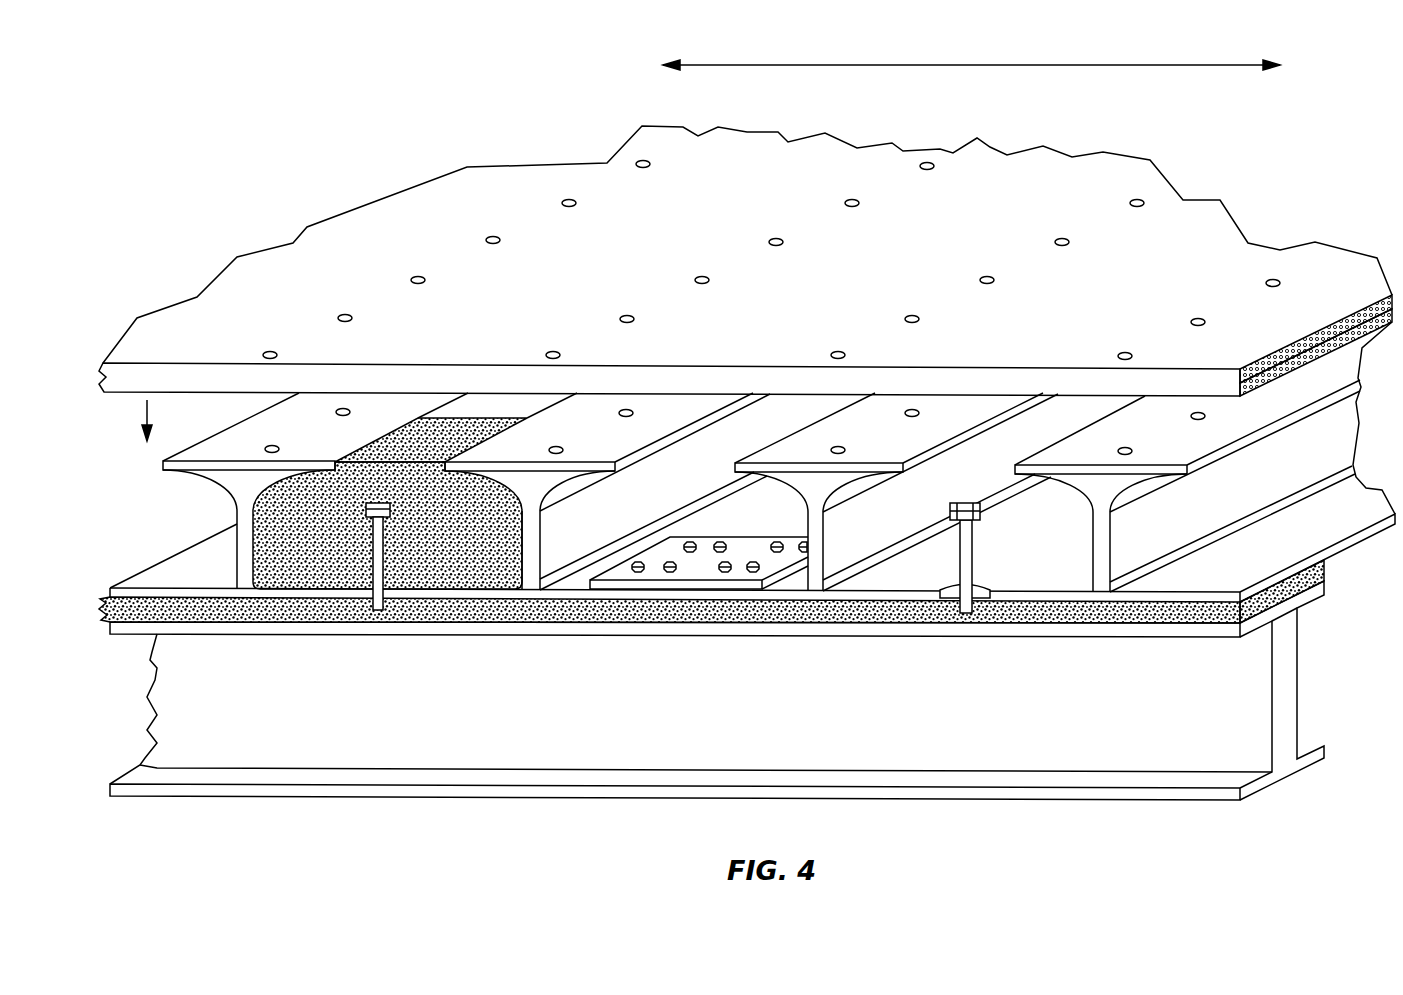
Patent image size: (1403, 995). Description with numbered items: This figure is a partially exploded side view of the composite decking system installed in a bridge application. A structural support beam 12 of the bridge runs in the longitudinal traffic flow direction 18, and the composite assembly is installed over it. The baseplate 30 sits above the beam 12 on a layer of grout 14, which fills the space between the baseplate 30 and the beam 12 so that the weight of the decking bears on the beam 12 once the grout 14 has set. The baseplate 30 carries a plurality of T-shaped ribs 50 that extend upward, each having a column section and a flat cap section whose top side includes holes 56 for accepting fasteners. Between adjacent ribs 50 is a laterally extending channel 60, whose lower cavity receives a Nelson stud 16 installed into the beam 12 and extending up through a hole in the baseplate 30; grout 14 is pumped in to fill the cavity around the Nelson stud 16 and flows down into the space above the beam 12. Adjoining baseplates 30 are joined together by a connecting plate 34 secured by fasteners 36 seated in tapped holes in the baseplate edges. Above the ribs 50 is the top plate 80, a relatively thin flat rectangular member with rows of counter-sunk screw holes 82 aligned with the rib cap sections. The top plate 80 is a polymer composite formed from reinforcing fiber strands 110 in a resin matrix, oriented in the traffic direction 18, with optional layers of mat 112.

The beam 12 is at (1252, 678).
The grout 14 is at (152, 612).
The Nelson stud 16 is at (965, 504).
The longitudinal direction 18 is at (993, 64).
The baseplate 30 is at (1205, 457).
The connecting plate 34 is at (752, 547).
The fasteners 36 is at (660, 566).
The rib 50 is at (1096, 450).
The holes 56 is at (912, 417).
The channel 60 is at (673, 486).
The top plate 80 is at (745, 261).
The counter-sunk screw holes 82 is at (345, 315).
The reinforcing fiber strands 110 is at (1320, 327).
The mat 112 is at (1347, 320).